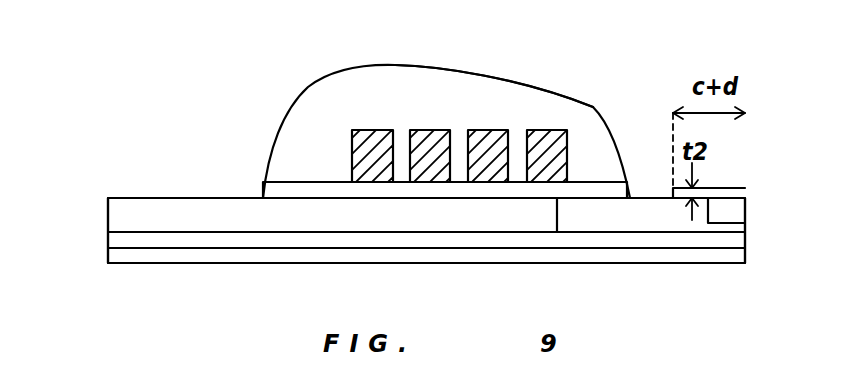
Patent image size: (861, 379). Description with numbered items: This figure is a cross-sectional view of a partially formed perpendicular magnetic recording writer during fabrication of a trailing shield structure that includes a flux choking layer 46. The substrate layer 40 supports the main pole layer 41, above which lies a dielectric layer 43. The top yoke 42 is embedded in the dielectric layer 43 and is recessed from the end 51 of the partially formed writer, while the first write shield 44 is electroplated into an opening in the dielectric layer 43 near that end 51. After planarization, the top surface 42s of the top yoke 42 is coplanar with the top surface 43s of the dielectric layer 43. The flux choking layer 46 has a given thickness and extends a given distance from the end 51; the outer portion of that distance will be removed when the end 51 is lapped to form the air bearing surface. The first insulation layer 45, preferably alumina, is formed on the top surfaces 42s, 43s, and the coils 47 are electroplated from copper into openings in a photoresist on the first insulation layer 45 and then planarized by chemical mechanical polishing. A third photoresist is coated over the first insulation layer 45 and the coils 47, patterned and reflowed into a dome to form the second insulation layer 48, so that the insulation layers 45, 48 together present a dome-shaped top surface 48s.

The substrate 40 is at (116, 255).
The main pole layer 41 is at (118, 240).
The top yoke 42 is at (118, 216).
The top surface of top yoke 42s is at (124, 198).
The dielectric layer 43 is at (741, 227).
The top surface of dielectric layer 43s is at (643, 198).
The first write shield 44 is at (741, 208).
The first insulation layer 45 is at (269, 183).
The flux choking layer 46 is at (741, 192).
The coils 47 is at (427, 143).
The second insulation layer 48 is at (361, 86).
The top surface of second insulation layer 48s is at (543, 83).
The end of the partially formed PMR writer 51 is at (741, 240).